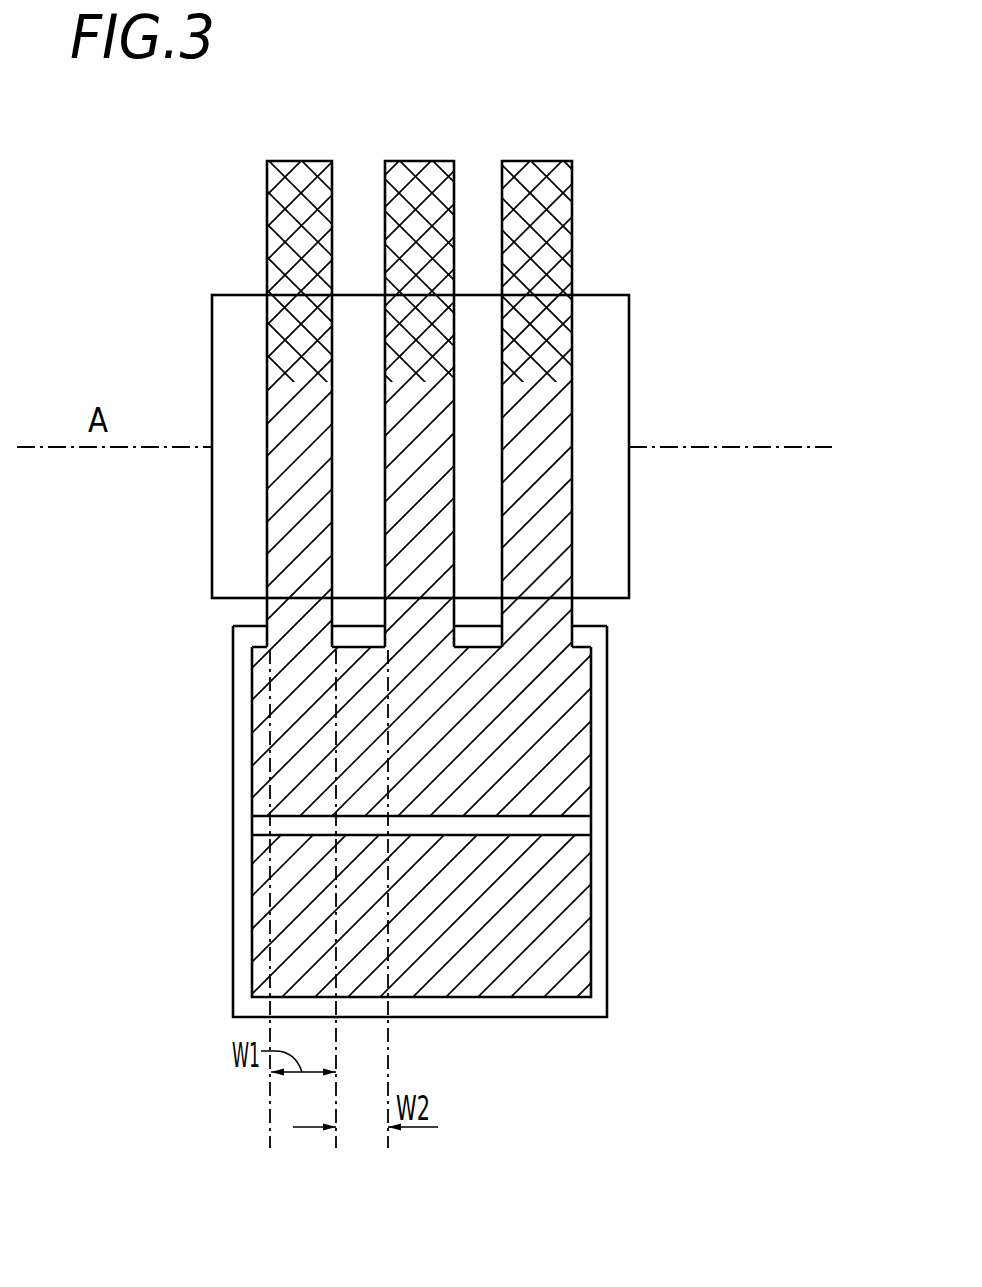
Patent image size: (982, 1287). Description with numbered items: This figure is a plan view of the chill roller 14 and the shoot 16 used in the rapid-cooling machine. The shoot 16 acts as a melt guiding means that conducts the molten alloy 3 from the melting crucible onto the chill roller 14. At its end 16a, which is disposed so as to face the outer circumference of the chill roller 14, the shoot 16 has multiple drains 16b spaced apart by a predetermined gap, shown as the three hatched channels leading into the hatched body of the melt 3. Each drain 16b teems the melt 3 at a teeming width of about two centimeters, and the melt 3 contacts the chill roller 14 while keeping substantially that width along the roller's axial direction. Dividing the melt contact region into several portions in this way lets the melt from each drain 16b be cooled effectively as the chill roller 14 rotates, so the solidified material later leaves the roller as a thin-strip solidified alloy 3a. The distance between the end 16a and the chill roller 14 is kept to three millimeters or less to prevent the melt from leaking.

The molten alloy 3 is at (565, 913).
The thin-strip solidified alloy 3a is at (555, 231).
The chill roller 14 is at (622, 361).
The shoot 16 is at (613, 809).
The end of the shoot 16a is at (598, 633).
The drains 16b is at (291, 664).